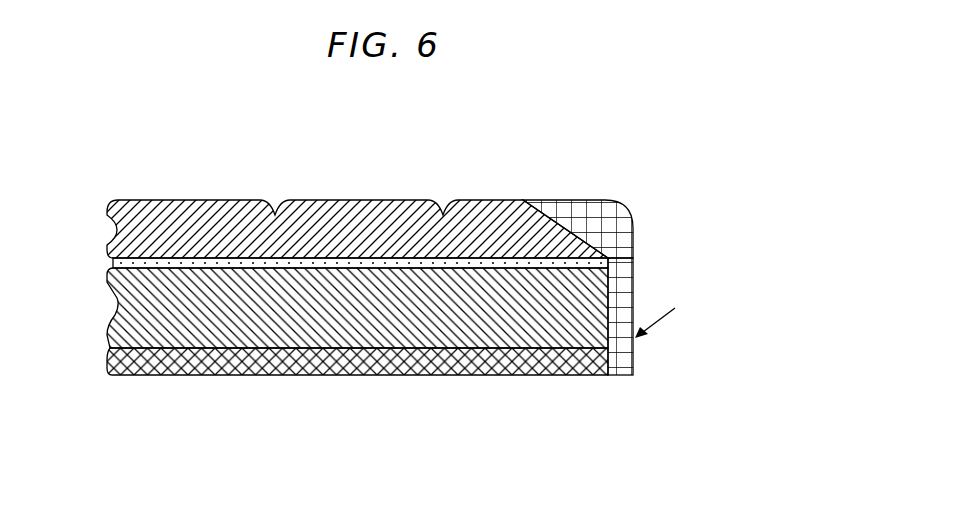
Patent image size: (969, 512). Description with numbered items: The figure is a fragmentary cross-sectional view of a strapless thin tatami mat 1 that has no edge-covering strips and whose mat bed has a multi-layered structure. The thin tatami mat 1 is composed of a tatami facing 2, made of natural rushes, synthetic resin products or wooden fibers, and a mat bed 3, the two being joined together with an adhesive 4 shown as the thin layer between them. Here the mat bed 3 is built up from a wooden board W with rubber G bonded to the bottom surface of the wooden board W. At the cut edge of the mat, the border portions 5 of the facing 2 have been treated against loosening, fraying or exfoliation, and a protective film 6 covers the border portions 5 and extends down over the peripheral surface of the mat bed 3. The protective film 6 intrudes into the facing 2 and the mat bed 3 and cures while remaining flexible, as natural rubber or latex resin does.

The thin tatami mat 1 is at (219, 186).
The tatami facing 2 is at (234, 215).
The mat bed 3 is at (288, 417).
The adhesive 4 is at (152, 269).
The border portions 5 is at (566, 224).
The protective film 6 is at (617, 253).
The wooden board W is at (238, 320).
The rubber G is at (269, 373).